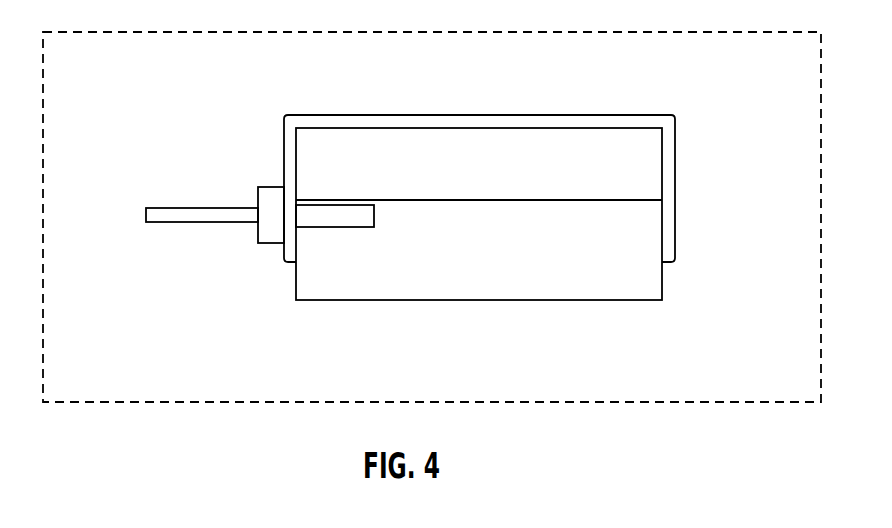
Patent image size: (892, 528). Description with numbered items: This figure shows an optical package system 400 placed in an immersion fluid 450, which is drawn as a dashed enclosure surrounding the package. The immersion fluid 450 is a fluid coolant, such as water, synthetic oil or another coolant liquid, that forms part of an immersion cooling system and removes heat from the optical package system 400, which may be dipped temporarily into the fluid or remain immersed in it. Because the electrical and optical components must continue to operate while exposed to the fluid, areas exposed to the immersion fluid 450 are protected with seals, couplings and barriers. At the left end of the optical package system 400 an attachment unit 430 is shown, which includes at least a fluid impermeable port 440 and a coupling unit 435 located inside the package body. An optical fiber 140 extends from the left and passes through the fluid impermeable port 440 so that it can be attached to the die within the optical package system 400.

The optical package system 400 is at (313, 380).
The immersion fluid 450 is at (110, 32).
The attachment unit 430 is at (265, 252).
The coupling unit 435 is at (355, 212).
The fluid impermeable port 440 is at (263, 192).
The optical fiber 140 is at (180, 213).